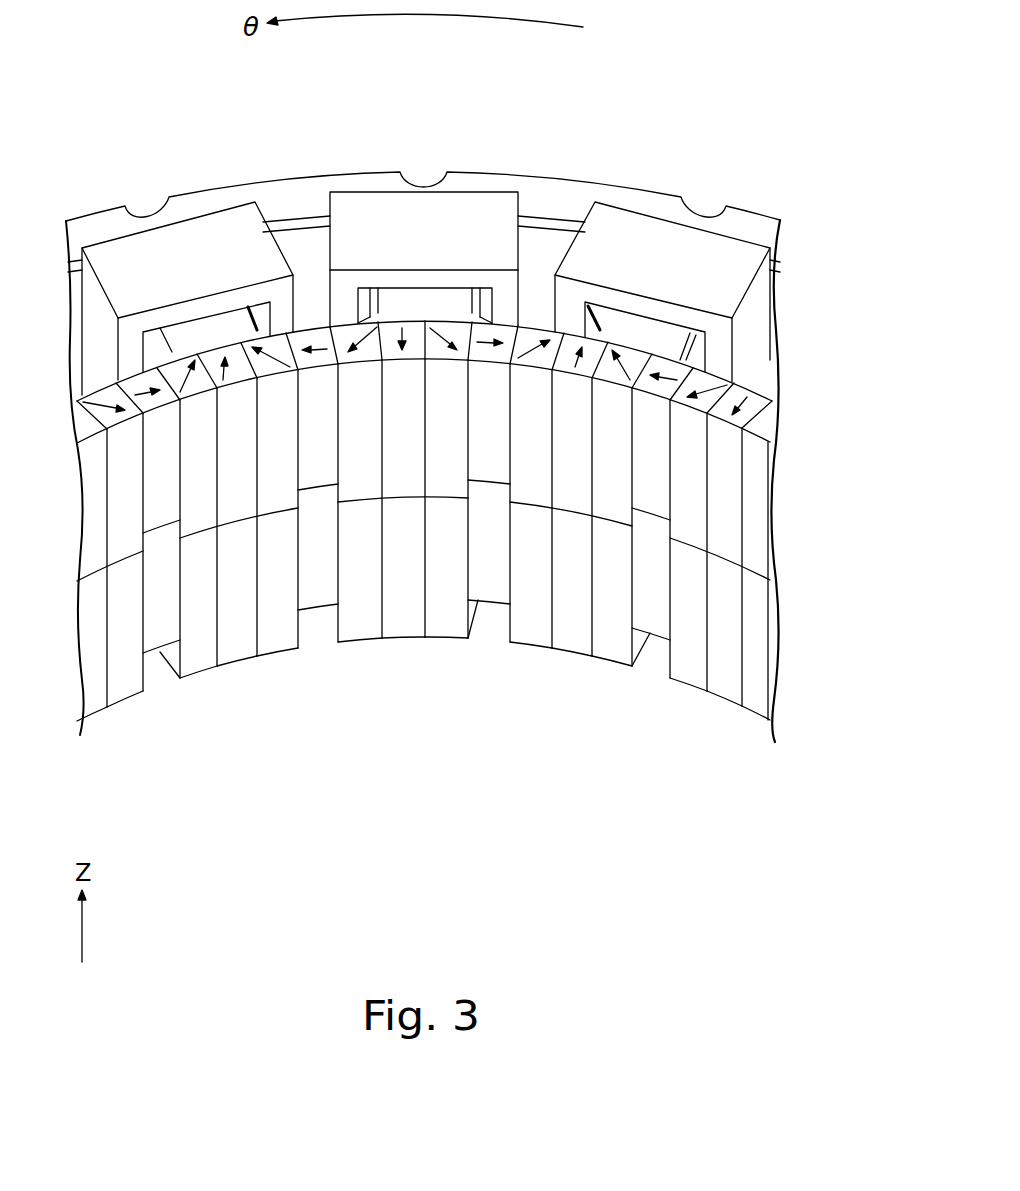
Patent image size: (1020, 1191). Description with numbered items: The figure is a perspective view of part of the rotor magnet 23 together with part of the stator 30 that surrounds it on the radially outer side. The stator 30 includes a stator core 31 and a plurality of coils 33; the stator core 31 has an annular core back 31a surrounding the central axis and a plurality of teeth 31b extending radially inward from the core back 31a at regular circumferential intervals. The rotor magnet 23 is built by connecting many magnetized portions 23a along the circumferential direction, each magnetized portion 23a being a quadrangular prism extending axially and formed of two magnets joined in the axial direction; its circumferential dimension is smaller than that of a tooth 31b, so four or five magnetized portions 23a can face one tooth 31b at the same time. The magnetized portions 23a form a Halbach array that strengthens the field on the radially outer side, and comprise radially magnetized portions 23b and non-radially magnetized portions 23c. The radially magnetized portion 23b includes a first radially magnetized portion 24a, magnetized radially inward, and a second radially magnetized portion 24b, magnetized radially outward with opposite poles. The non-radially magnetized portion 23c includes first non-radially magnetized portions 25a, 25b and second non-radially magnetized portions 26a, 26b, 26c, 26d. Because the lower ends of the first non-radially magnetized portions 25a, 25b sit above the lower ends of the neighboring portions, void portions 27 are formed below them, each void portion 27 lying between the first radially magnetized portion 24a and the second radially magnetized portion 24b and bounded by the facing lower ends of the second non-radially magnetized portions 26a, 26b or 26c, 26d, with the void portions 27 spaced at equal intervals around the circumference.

The rotor magnet 23 is at (773, 535).
The magnetized portion 23a is at (847, 152).
The radially magnetized portion 23b is at (585, 327).
The non-radially magnetized portion 23c is at (632, 330).
The first radially magnetized portion 24a is at (407, 627).
The second radially magnetized portion 24b is at (240, 650).
The first non-radially magnetized portion 25a is at (320, 590).
The first non-radially magnetized portion 25b is at (162, 630).
The second non-radially magnetized portion 26a is at (363, 627).
The second non-radially magnetized portion 26b is at (280, 642).
The second non-radially magnetized portion 26c is at (200, 657).
The second non-radially magnetized portion 26d is at (123, 690).
The void portion 27 is at (158, 680).
The stator 30 is at (712, 113).
The stator core 31 is at (298, 175).
The core back 31a is at (365, 182).
The tooth 31b is at (225, 325).
The coil 33 is at (157, 253).